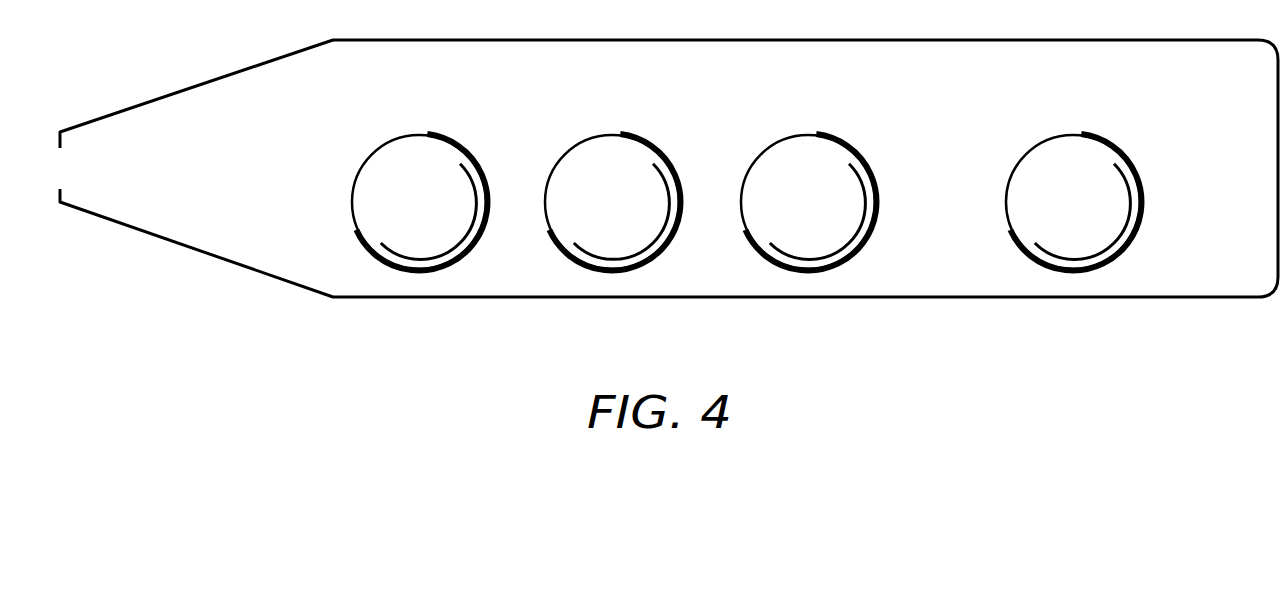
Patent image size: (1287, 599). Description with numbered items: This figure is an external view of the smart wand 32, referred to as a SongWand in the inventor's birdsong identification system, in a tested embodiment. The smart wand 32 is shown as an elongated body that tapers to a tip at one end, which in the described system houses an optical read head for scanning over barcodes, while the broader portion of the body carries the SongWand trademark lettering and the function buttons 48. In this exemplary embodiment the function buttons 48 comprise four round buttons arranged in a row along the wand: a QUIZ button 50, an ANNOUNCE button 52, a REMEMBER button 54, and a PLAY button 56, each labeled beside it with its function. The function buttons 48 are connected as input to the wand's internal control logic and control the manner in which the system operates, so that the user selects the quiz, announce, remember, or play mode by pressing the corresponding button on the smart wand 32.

The smart wand 32 is at (348, 335).
The function buttons 48 is at (333, 213).
The QUIZ button 50 is at (387, 163).
The ANNOUNCE button 52 is at (595, 167).
The REMEMBER button 54 is at (797, 237).
The PLAY button 56 is at (1098, 168).